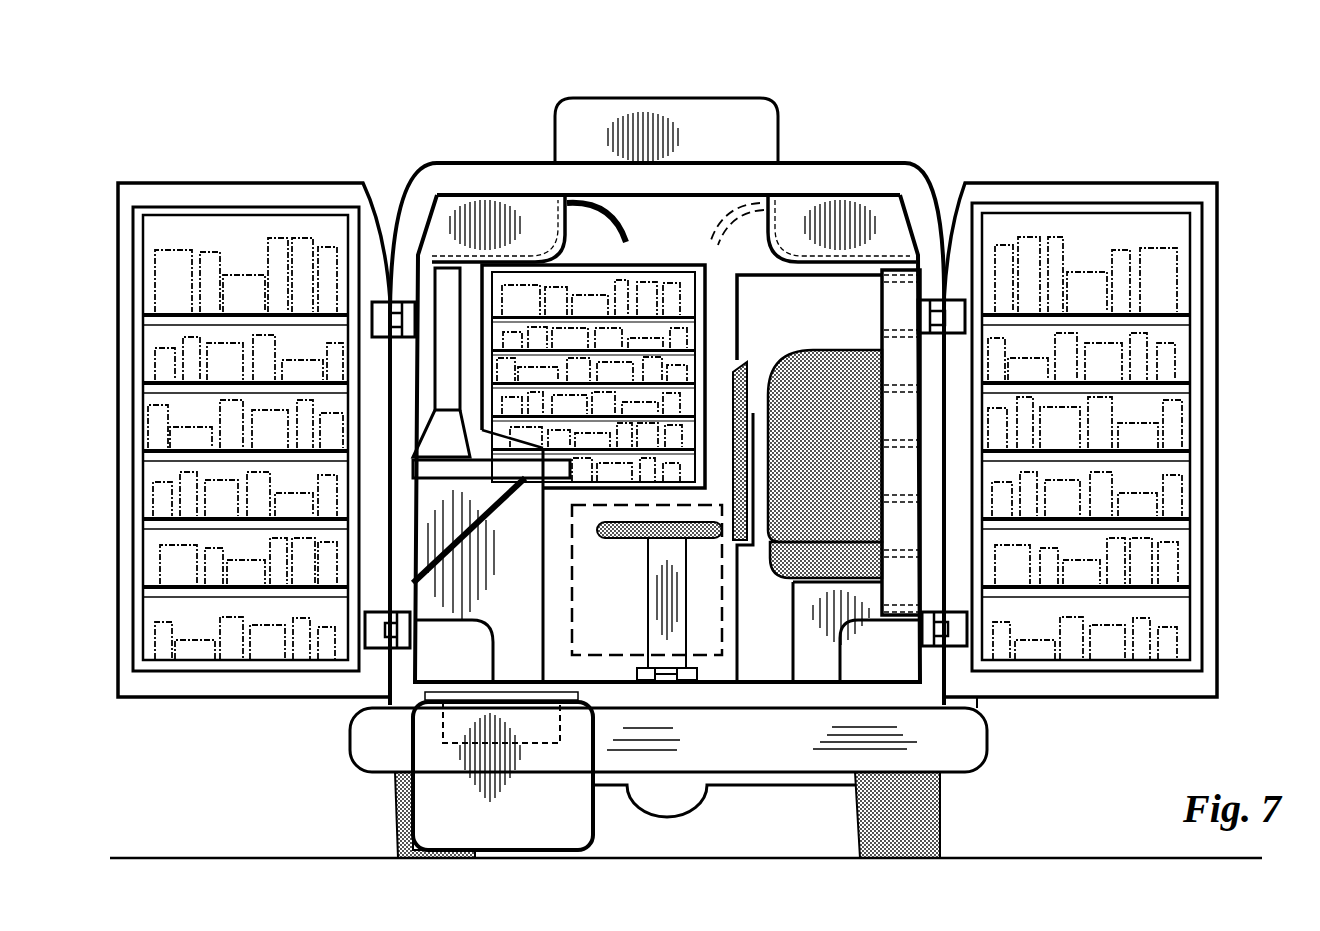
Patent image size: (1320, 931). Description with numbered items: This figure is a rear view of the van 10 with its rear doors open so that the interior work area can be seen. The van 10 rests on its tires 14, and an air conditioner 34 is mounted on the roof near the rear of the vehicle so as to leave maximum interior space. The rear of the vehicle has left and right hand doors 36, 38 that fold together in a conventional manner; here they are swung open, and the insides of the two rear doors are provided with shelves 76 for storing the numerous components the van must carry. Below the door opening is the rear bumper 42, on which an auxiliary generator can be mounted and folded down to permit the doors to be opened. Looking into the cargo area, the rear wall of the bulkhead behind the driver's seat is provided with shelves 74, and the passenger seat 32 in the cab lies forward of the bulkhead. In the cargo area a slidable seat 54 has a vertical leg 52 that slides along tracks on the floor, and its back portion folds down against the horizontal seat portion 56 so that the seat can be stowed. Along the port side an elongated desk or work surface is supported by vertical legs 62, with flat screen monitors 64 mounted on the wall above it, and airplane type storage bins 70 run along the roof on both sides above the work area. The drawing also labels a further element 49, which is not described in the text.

The van 10 is at (810, 147).
The tires 14 is at (395, 826).
The passenger seat 32 is at (813, 388).
The air conditioner 34 is at (587, 114).
The left hand door 36 is at (118, 483).
The right hand door 38 is at (1213, 385).
The rear bumper 42 is at (757, 745).
The storage compartment 49 is at (561, 812).
The vertical leg 52 is at (666, 630).
The slidable seat 54 is at (742, 370).
The horizontal seat portion 56 is at (632, 541).
The vertical legs 62 is at (530, 478).
The flat screen monitors 64 is at (445, 297).
The storage bins 70 is at (510, 232).
The shelves 74 is at (640, 272).
The shelves 76 is at (165, 378).